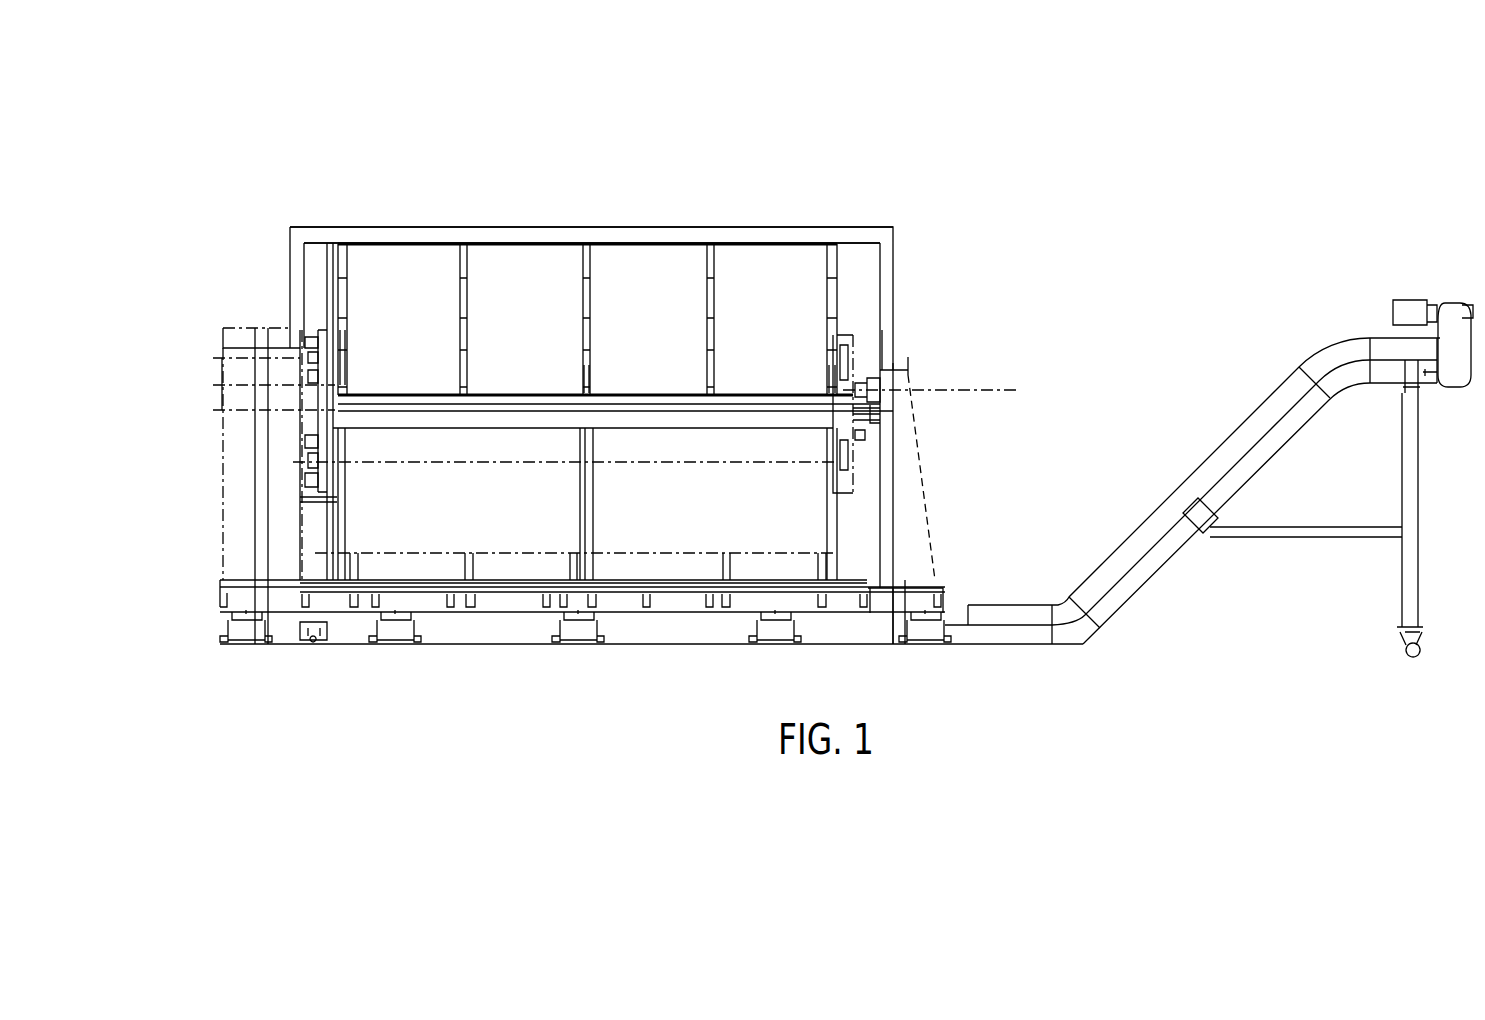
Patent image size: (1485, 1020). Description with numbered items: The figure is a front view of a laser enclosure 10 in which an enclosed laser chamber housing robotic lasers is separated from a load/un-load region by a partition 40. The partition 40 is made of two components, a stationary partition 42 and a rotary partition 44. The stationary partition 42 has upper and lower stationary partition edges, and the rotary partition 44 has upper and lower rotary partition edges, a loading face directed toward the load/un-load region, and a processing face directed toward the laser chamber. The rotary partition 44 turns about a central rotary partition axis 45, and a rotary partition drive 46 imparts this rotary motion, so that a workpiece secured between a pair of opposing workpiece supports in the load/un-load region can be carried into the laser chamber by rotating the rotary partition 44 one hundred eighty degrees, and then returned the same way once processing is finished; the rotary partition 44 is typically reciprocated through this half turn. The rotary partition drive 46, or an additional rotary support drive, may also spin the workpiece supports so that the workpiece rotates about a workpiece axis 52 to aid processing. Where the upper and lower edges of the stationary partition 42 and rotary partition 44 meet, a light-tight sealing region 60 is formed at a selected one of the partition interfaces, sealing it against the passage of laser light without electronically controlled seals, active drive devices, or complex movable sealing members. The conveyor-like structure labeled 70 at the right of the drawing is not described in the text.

The laser enclosure 10 is at (985, 137).
The partition 40 is at (668, 141).
The stationary partition 42 is at (645, 238).
The rotary partition 44 is at (668, 334).
The central rotary partition axis 45 is at (238, 410).
The rotary partition drive 46 is at (216, 455).
The workpiece axis 52 is at (743, 465).
The light-tight sealing region 60 is at (745, 240).
The conveyor 70 is at (1156, 512).